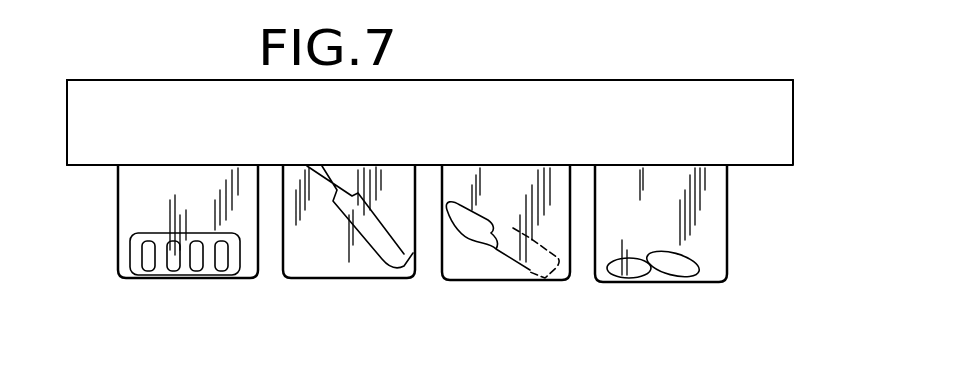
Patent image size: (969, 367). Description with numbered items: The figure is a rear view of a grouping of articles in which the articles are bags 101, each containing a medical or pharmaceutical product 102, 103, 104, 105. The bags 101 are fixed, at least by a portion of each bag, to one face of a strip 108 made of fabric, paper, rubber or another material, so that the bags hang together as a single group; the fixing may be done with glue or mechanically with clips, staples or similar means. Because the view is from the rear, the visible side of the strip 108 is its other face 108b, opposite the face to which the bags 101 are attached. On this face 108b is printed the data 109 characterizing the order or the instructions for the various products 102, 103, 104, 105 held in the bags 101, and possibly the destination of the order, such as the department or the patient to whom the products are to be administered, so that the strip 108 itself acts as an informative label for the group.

The bag 101 is at (130, 196).
The medical or pharmaceutical product 102 is at (638, 275).
The medical or pharmaceutical product 103 is at (529, 258).
The medical or pharmaceutical product 104 is at (383, 258).
The medical or pharmaceutical product 105 is at (188, 272).
The strip 108 is at (700, 65).
The other face of the strip 108b is at (540, 98).
The data 109 is at (68, 118).